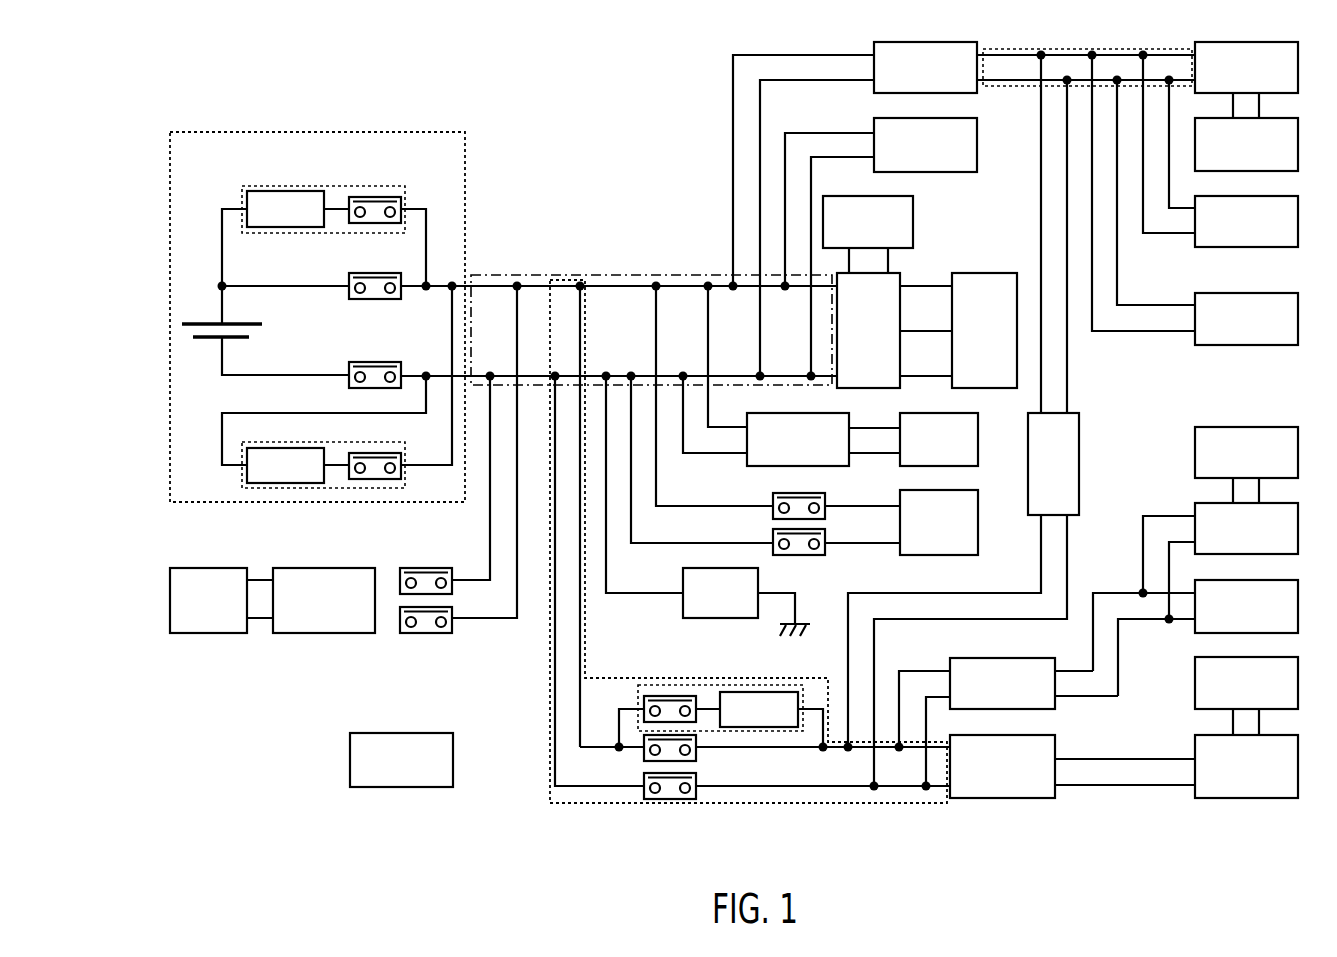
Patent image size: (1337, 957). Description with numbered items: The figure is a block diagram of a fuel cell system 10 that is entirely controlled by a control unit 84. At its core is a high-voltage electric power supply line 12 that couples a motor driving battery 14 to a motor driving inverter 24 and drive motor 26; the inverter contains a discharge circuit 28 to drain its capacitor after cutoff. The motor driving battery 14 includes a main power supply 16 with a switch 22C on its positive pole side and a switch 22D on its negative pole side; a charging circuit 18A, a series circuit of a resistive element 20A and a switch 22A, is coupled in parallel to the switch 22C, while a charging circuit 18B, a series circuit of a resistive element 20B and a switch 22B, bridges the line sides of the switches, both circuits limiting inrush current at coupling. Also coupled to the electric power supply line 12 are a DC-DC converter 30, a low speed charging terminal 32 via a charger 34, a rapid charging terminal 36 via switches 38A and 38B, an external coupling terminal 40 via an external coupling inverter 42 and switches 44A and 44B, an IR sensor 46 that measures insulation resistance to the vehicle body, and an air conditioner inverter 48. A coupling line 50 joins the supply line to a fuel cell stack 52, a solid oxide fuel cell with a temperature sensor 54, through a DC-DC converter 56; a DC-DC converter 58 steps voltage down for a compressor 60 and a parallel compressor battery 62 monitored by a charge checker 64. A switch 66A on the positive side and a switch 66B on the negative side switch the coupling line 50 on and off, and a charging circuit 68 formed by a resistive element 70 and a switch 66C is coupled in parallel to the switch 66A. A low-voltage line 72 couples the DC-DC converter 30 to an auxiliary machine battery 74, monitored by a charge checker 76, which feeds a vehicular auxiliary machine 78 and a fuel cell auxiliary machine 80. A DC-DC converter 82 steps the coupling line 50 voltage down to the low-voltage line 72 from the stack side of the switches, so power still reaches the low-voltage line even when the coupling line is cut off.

The fuel cell system 10 is at (527, 68).
The electric power supply line 12 is at (622, 274).
The motor driving battery 14 is at (234, 131).
The main power supply 16 is at (199, 319).
The charging circuit 18A is at (242, 191).
The charging circuit 18B is at (242, 479).
The resistive element 20A is at (257, 190).
The resistive element 20B is at (258, 484).
The switch 22A is at (390, 196).
The switch 22B is at (359, 479).
The switch 22C is at (390, 272).
The switch 22D is at (390, 361).
The motor driving inverter 24 is at (901, 278).
The drive motor 26 is at (985, 272).
The discharge circuit 28 is at (914, 222).
The DC-DC converter 30 is at (904, 41).
The low speed charging terminal 32 is at (979, 441).
The charger 34 is at (849, 419).
The rapid charging terminal 36 is at (979, 532).
The switch 38A is at (825, 504).
The switch 38B is at (825, 542).
The external coupling terminal 40 is at (190, 634).
The external coupling inverter 42 is at (321, 634).
The switch 44A is at (426, 567).
The switch 44B is at (427, 634).
The IR sensor 46 is at (713, 619).
The air conditioner inverter 48 is at (978, 146).
The coupling line 50 is at (549, 787).
The fuel cell stack 52 is at (1222, 799).
The temperature sensor 54 is at (1299, 688).
The DC-DC converter 56 is at (1056, 741).
The DC-DC converter 58 is at (1040, 658).
The compressor 60 is at (1299, 611).
The compressor battery 62 is at (1299, 532).
The charge checker 64 is at (1299, 454).
The switch 66A is at (697, 754).
The switch 66B is at (685, 800).
The switch 66C is at (668, 695).
The charging circuit 68 is at (637, 693).
The resistive element 70 is at (760, 691).
The low-voltage line 72 is at (1160, 48).
The auxiliary machine battery 74 is at (1299, 70).
The charge checker 76 is at (1299, 146).
The vehicular auxiliary machine 78 is at (1197, 248).
The fuel cell auxiliary machine 80 is at (1203, 346).
The DC-DC converter 82 is at (1080, 418).
The control unit 84 is at (349, 757).